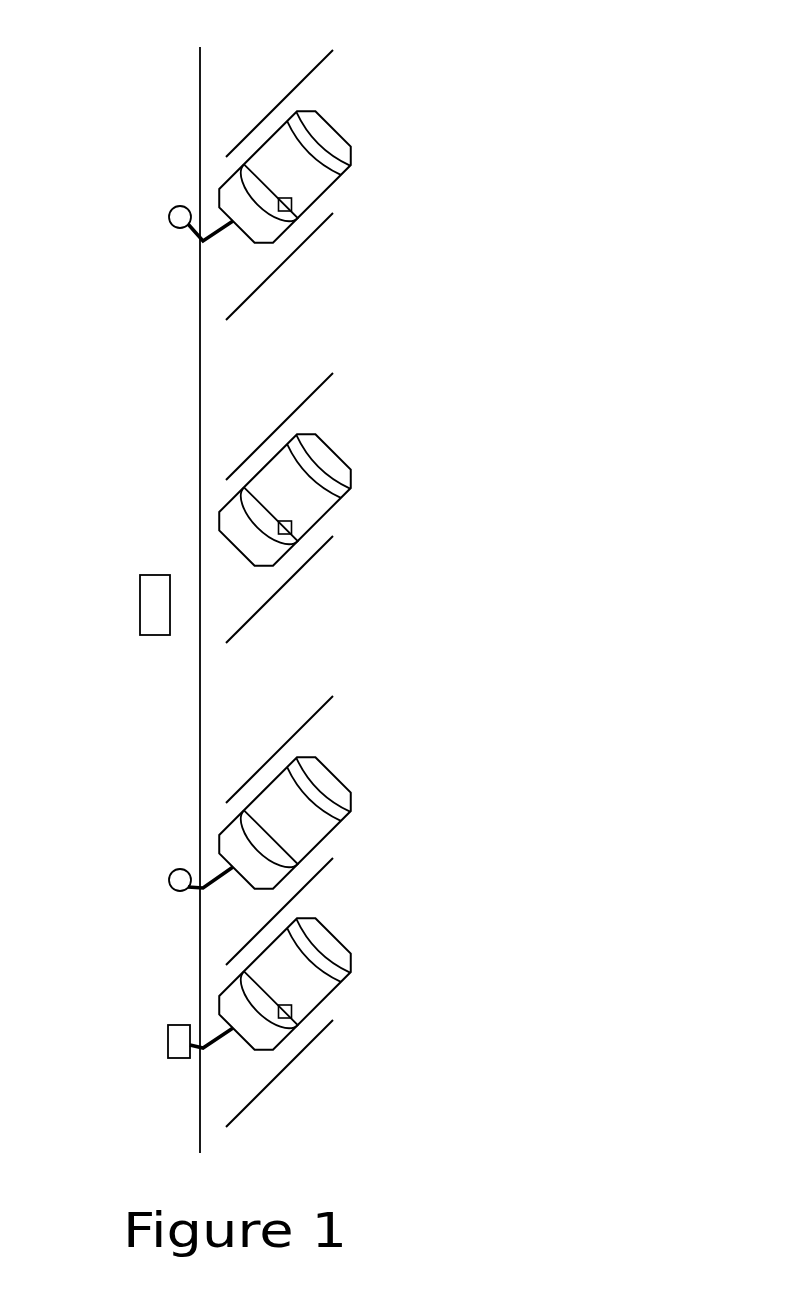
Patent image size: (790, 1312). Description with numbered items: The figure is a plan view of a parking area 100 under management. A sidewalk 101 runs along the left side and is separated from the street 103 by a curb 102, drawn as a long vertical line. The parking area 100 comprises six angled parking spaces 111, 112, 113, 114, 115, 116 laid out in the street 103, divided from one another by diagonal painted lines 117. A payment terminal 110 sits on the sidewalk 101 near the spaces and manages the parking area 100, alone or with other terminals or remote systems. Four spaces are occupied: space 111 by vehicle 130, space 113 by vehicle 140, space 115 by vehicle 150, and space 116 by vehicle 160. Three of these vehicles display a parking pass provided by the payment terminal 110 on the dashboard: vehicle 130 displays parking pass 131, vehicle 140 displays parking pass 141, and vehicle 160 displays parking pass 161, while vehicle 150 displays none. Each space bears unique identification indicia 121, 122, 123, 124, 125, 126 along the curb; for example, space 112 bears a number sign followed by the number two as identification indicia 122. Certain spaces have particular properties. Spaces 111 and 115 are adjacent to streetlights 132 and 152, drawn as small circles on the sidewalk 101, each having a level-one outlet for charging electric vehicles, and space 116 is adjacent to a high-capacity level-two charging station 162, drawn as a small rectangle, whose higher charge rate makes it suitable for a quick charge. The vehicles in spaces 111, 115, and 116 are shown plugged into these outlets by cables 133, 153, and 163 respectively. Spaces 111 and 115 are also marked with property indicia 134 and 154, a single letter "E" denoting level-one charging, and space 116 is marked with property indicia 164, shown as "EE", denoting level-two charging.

The parking area 100 is at (137, 76).
The sidewalk 101 is at (67, 564).
The curb 102 is at (199, 548).
The street 103 is at (327, 322).
The payment terminal 110 is at (140, 615).
The parking space 111 is at (212, 291).
The parking space 112 is at (212, 452).
The parking space 113 is at (212, 612).
The parking space 114 is at (212, 773).
The parking space 115 is at (212, 934).
The parking space 116 is at (212, 1097).
The parking space boundary line 117 is at (320, 384).
The identification indicia 121 is at (193, 304).
The identification indicia 122 is at (186, 453).
The identification indicia 123 is at (190, 618).
The identification indicia 124 is at (188, 785).
The identification indicia 125 is at (194, 930).
The identification indicia 126 is at (189, 1098).
The vehicle 130 is at (337, 123).
The parking pass 131 is at (293, 210).
The streetlight 132 is at (171, 214).
The cable 133 is at (201, 245).
The property indicia 134 is at (167, 295).
The vehicle 140 is at (338, 449).
The parking pass 141 is at (293, 533).
The vehicle 150 is at (338, 770).
The streetlight 152 is at (168, 873).
The cable 153 is at (202, 890).
The property indicia 154 is at (164, 930).
The vehicle 160 is at (340, 936).
The parking pass 161 is at (293, 1019).
The high-capacity charging station 162 is at (168, 1040).
The cable 163 is at (202, 1052).
The property indicia 164 is at (164, 1090).